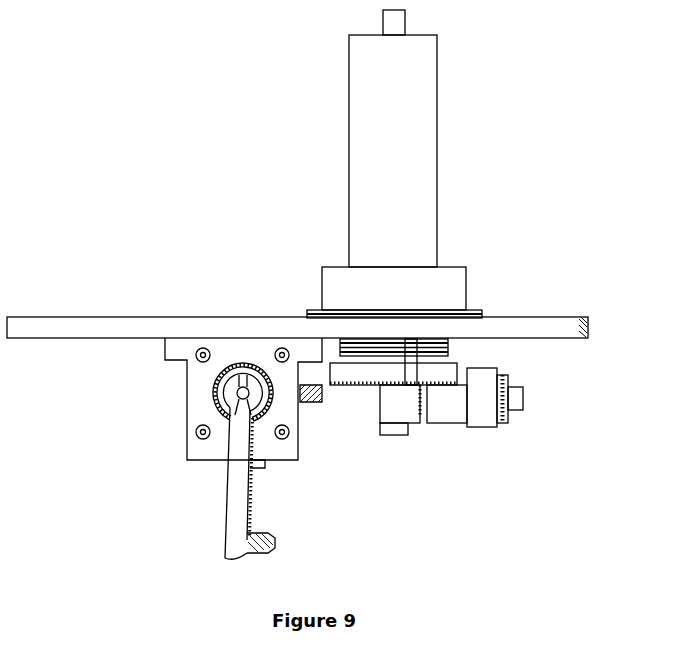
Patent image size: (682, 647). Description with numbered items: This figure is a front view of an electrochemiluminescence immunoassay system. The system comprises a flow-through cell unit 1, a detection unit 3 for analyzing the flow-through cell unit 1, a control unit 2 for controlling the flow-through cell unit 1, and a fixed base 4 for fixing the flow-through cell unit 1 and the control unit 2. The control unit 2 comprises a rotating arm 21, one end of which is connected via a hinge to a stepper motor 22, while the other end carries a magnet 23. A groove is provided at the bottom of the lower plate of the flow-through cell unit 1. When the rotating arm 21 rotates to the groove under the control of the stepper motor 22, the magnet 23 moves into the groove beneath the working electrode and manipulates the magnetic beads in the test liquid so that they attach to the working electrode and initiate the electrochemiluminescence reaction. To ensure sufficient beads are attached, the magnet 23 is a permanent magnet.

The flow-through cell unit 1 is at (487, 405).
The control unit 2 is at (49, 395).
The detection unit 3 is at (397, 213).
The fixed base 4 is at (83, 327).
The rotating arm 21 is at (237, 483).
The stepper motor 22 is at (200, 405).
The magnet 23 is at (243, 539).